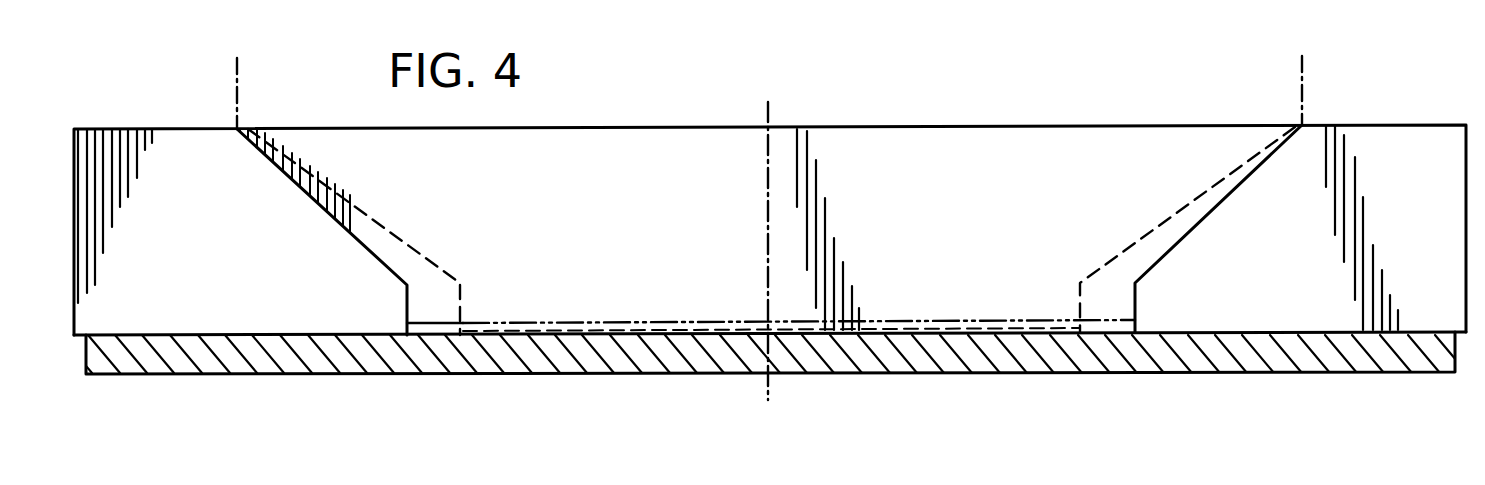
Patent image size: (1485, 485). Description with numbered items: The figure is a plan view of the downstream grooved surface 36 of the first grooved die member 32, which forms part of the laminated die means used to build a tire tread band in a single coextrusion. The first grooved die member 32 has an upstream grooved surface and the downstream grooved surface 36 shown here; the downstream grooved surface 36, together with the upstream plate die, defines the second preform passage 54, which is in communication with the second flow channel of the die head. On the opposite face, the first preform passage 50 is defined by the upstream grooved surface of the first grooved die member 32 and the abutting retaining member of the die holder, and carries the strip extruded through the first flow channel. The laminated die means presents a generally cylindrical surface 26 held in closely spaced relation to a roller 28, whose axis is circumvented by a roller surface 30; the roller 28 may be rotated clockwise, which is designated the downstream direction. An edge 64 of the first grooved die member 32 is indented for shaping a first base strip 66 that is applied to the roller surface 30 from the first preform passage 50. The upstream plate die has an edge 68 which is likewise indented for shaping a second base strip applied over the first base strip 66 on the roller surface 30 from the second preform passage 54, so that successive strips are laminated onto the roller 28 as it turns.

The cylindrical surface 26 is at (355, 337).
The roller 28 is at (1311, 382).
The roller surface 30 is at (1270, 332).
The first grooved die member 32 is at (1382, 124).
The downstream grooved surface 36 is at (178, 157).
The first preform passage 50 is at (400, 240).
The second preform passage 54 is at (1007, 148).
The edge 64 is at (875, 335).
The first base strip 66 is at (618, 337).
The edge 68 is at (966, 323).